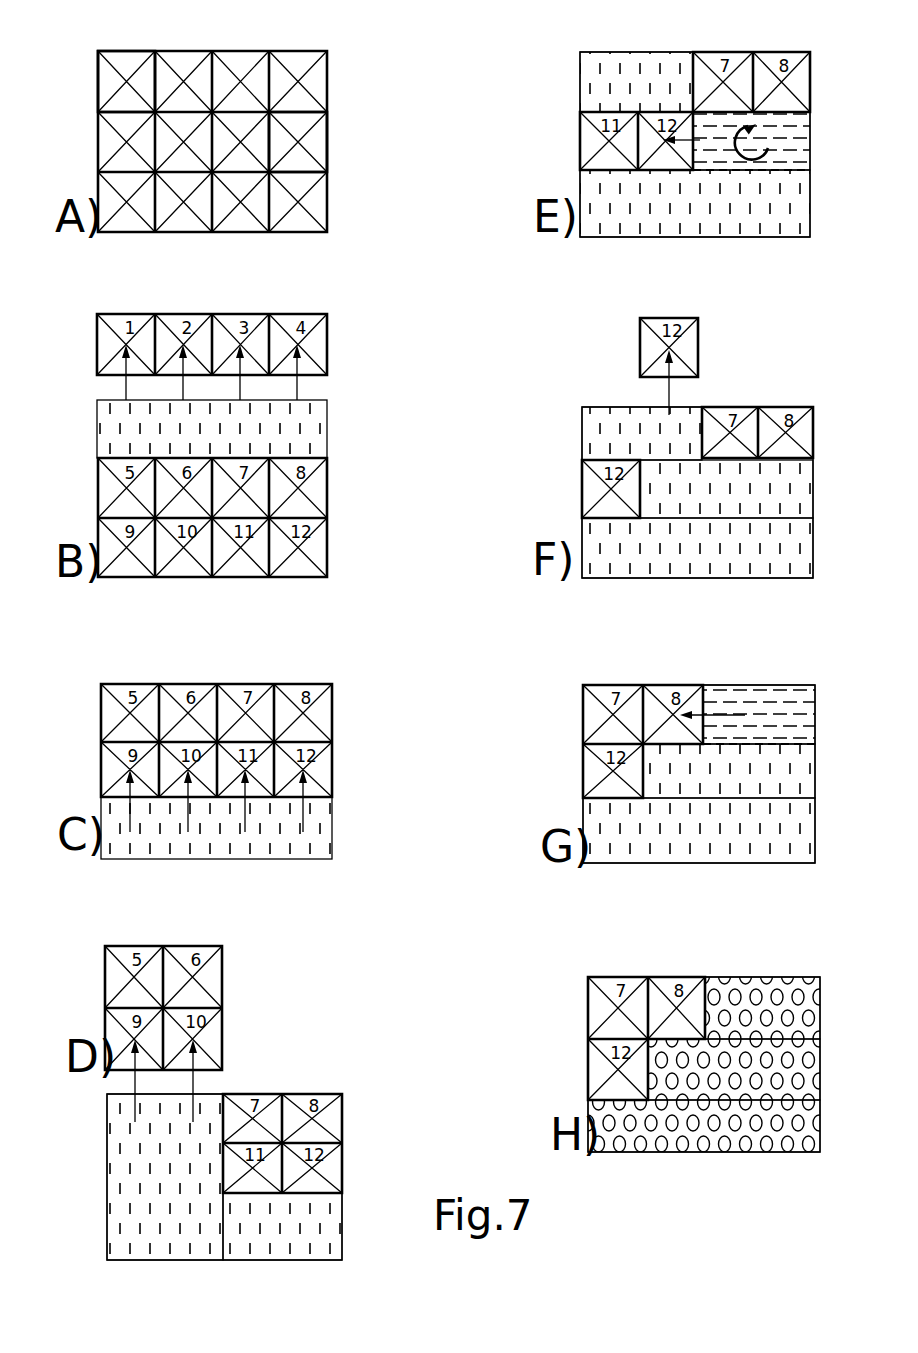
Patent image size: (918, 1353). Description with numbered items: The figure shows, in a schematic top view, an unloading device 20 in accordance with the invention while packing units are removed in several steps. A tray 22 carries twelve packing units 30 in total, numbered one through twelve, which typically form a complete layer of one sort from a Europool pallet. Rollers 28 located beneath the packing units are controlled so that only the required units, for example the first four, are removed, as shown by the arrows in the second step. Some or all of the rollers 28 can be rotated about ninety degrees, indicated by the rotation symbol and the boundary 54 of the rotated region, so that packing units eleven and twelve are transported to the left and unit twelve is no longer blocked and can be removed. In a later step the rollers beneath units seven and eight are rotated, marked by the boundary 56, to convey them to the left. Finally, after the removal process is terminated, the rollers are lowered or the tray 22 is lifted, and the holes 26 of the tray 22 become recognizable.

The image grid 20 is at (226, 40).
The tray 22 is at (92, 92).
The packing unit 30 is at (313, 138).
The rollers 28 is at (310, 428).
The boundary line 54 is at (780, 178).
The boundary line 56 is at (783, 740).
The holes 26 is at (807, 1028).